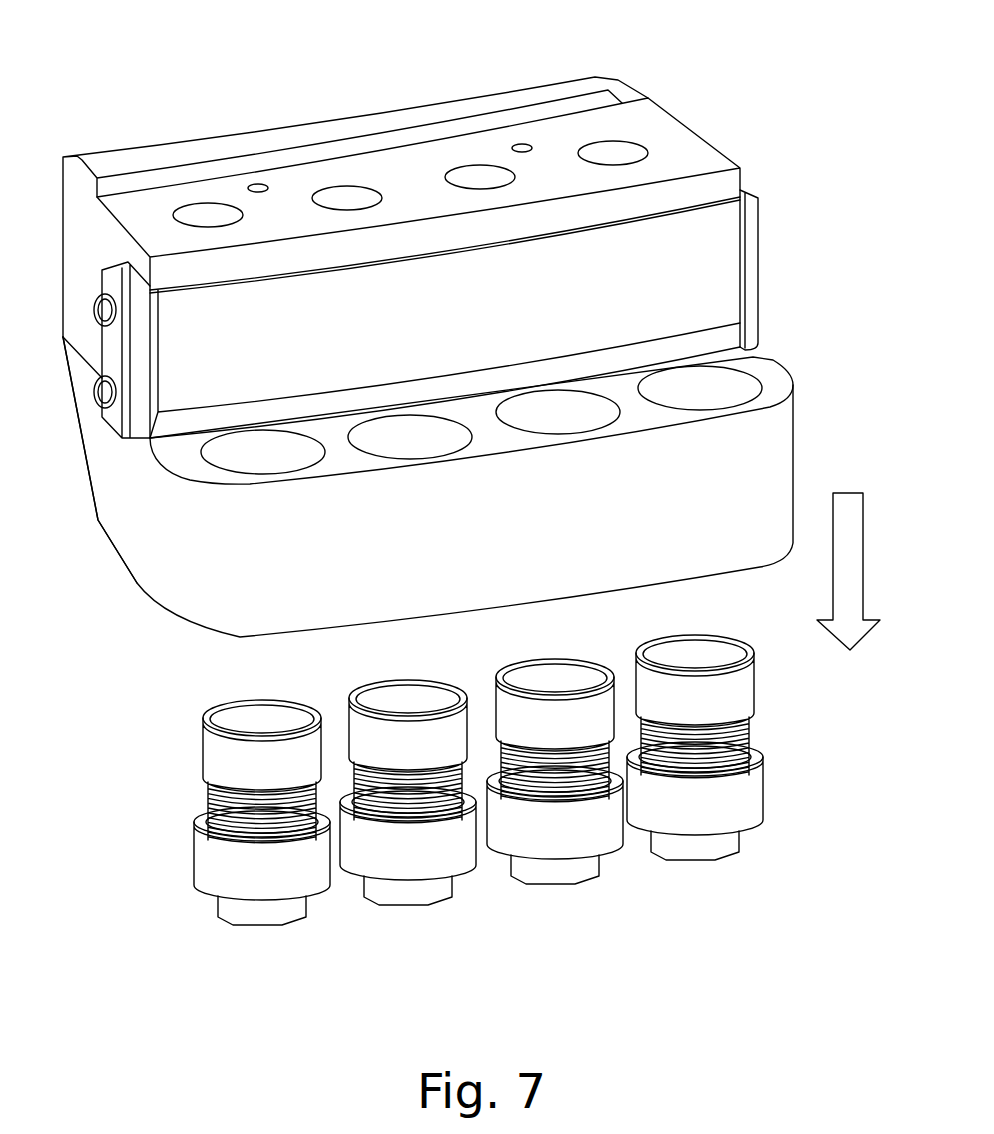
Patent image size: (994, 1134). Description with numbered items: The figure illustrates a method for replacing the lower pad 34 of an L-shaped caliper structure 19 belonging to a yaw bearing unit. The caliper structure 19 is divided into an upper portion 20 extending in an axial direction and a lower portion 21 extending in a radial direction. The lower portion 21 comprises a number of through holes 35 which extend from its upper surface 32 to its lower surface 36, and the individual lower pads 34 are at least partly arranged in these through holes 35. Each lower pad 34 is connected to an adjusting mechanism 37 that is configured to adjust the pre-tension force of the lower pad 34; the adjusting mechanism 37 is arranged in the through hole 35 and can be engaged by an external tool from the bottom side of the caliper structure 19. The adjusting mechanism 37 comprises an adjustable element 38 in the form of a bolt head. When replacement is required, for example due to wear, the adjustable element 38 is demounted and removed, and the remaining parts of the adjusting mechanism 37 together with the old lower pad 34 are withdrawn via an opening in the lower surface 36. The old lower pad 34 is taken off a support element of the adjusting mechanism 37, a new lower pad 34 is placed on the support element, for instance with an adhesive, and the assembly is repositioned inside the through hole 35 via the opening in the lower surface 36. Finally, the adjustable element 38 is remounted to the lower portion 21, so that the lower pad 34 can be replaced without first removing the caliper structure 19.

The caliper structure 19 is at (298, 86).
The upper portion 20 is at (429, 226).
The lower portion 21 is at (524, 567).
The upper surface 32 is at (474, 459).
The lower pad 34 is at (258, 712).
The through holes 35 is at (560, 404).
The lower surface 36 is at (134, 587).
The adjusting mechanism 37 is at (616, 866).
The adjustable element 38 is at (283, 917).